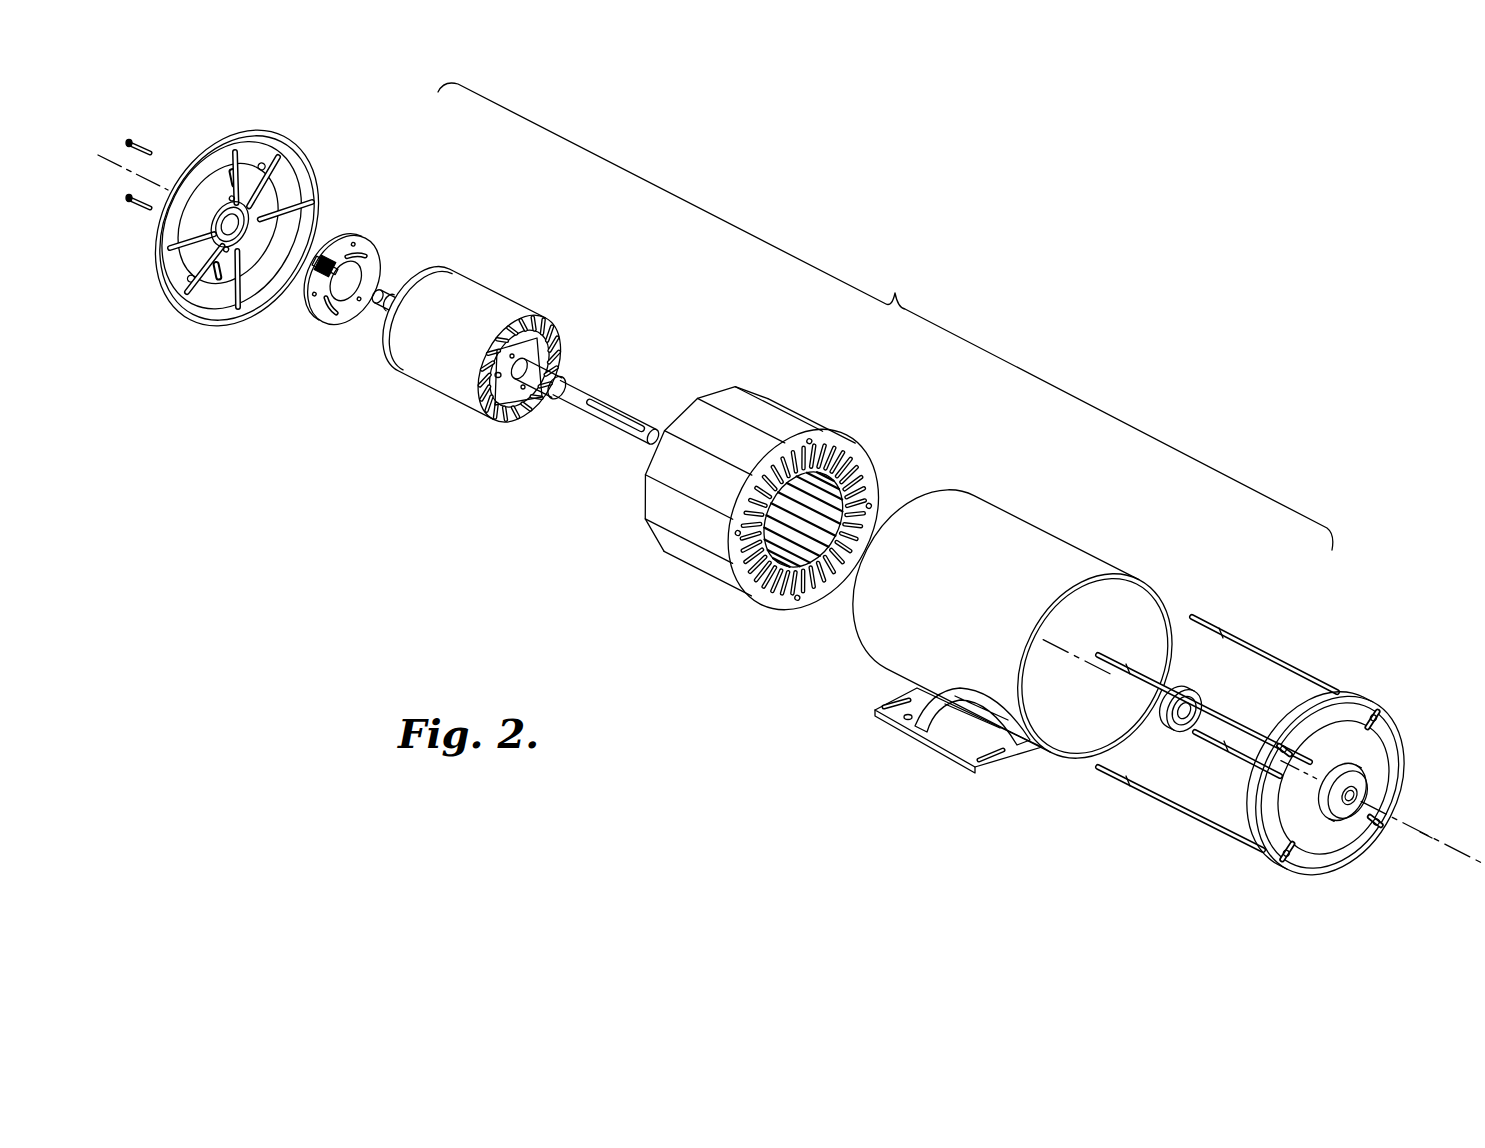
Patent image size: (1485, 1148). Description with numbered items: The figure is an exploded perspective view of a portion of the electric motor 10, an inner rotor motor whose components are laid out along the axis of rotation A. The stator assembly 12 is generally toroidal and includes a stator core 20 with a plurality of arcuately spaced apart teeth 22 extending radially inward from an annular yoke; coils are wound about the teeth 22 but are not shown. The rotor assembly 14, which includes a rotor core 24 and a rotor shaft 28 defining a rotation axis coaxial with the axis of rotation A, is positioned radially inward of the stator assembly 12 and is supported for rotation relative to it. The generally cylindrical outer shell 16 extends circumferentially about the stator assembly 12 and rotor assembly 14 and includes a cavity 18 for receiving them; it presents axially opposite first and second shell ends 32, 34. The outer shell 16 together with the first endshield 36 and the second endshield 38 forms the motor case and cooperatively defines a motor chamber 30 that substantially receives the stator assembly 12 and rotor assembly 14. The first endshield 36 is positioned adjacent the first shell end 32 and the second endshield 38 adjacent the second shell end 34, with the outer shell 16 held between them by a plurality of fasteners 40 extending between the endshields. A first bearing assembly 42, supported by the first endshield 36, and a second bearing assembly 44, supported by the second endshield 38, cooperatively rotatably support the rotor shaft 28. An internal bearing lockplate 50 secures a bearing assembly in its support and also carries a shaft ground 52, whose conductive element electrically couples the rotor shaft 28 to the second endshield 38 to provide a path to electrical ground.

The electric motor 10 is at (885, 316).
The stator assembly 12 is at (781, 499).
The rotor assembly 14 is at (515, 360).
The outer shell 16 is at (1037, 623).
The cavity 18 is at (1123, 610).
The stator core 20 is at (803, 520).
The teeth 22 is at (868, 462).
The rotor core 24 is at (519, 368).
The rotor shaft 28 is at (515, 366).
The motor chamber 30 is at (927, 763).
The first shell end 32 is at (1040, 770).
The second shell end 34 is at (854, 661).
The first endshield 36 is at (1320, 872).
The second endshield 38 is at (227, 219).
The fasteners 40 is at (1302, 677).
The first bearing assembly 42 is at (1180, 690).
The second bearing assembly 44 is at (230, 230).
The internal bearing lockplate 50 is at (334, 274).
The shaft ground 52 is at (320, 277).
The axis of rotation A is at (1425, 835).